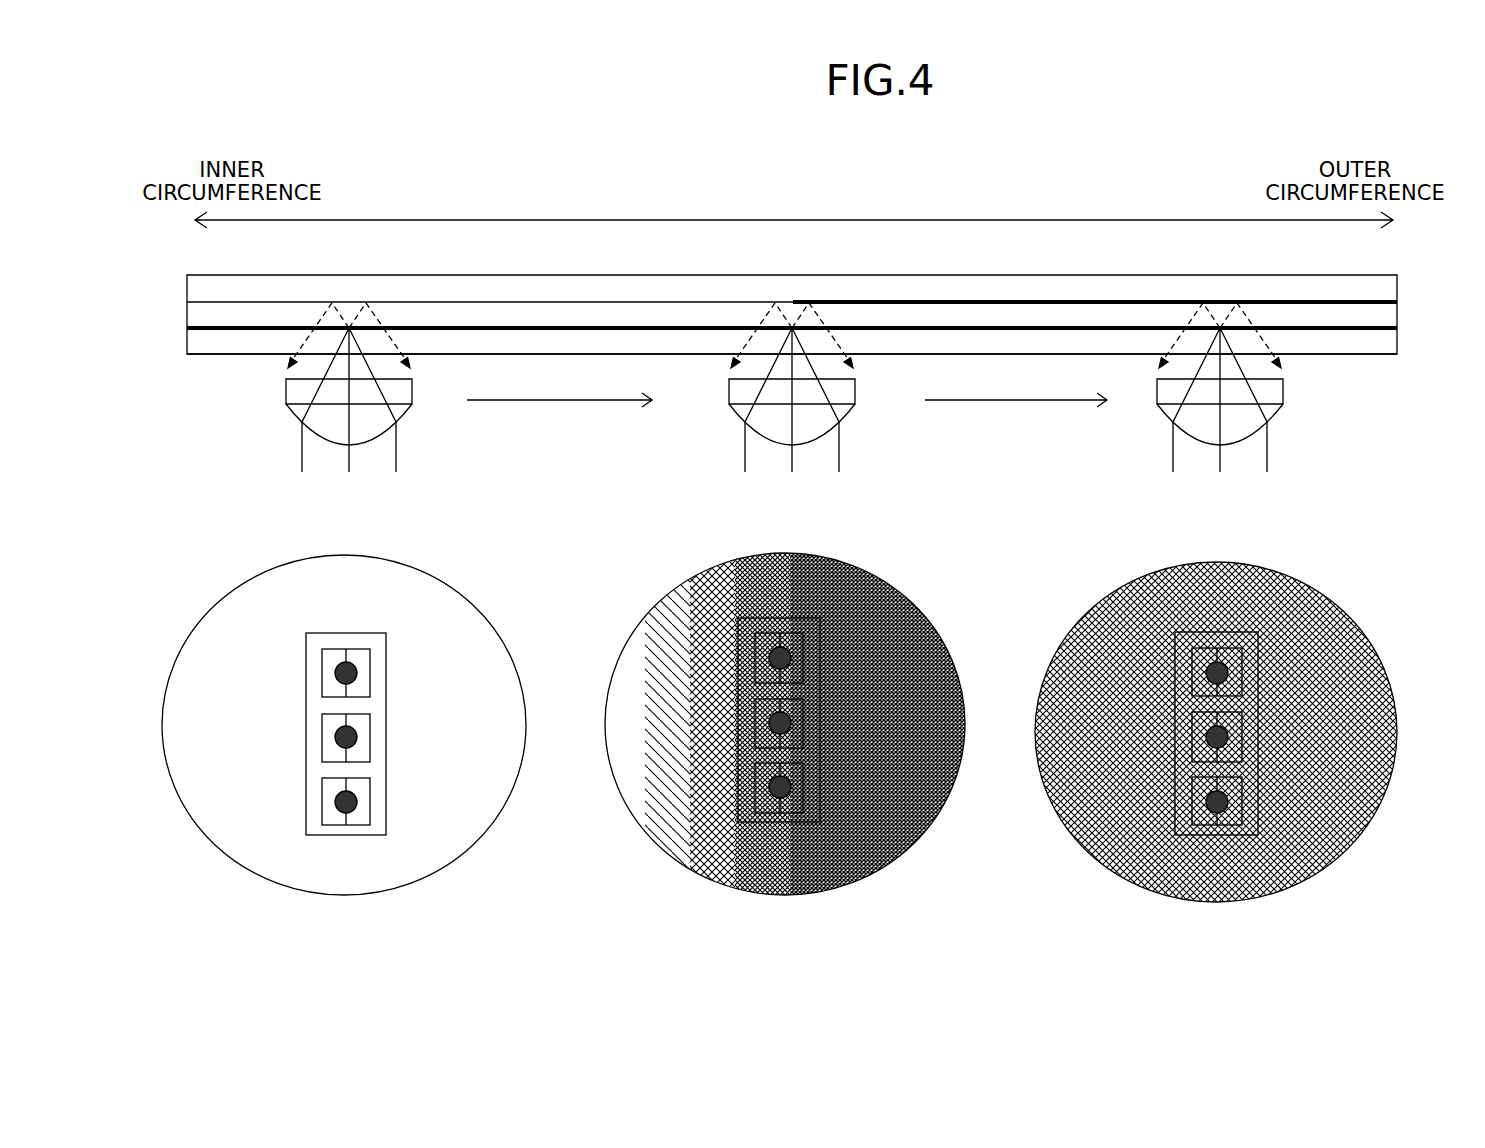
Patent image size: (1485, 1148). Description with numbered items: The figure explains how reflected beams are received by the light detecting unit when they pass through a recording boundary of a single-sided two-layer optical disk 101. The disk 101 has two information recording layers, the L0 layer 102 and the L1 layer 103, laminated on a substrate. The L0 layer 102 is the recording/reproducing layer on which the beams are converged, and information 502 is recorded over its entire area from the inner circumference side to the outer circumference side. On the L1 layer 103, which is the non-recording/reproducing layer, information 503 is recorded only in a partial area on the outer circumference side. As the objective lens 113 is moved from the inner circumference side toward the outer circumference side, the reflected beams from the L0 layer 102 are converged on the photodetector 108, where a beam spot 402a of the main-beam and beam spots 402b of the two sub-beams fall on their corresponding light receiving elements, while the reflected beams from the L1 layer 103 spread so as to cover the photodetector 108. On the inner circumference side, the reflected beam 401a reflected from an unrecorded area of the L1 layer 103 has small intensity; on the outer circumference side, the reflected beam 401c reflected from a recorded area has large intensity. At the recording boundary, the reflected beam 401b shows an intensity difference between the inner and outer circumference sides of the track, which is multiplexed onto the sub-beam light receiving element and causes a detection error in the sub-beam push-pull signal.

The optical disk 101 is at (183, 275).
The L0 layer 102 is at (1397, 342).
The L1 layer 103 is at (1397, 315).
The photodetector 108 is at (347, 632).
The objective lens 113 is at (400, 420).
The reflected beam 401a is at (432, 572).
The reflected beam 401b is at (882, 578).
The reflected beam 401c is at (1312, 585).
The beam spot 402a is at (357, 742).
The beam spots 402b is at (337, 673).
The information 502 is at (1348, 332).
The information 503 is at (1112, 293).